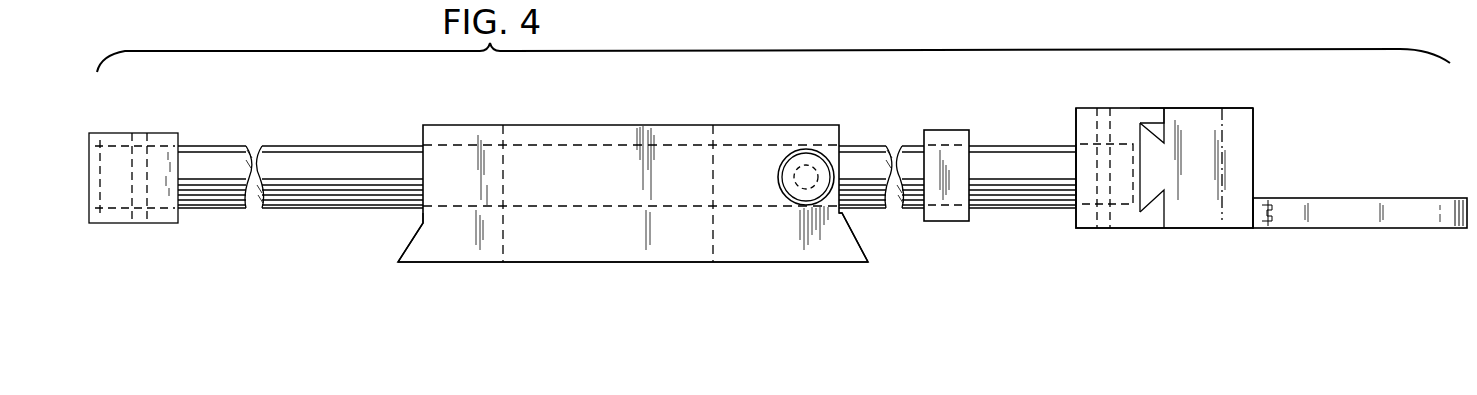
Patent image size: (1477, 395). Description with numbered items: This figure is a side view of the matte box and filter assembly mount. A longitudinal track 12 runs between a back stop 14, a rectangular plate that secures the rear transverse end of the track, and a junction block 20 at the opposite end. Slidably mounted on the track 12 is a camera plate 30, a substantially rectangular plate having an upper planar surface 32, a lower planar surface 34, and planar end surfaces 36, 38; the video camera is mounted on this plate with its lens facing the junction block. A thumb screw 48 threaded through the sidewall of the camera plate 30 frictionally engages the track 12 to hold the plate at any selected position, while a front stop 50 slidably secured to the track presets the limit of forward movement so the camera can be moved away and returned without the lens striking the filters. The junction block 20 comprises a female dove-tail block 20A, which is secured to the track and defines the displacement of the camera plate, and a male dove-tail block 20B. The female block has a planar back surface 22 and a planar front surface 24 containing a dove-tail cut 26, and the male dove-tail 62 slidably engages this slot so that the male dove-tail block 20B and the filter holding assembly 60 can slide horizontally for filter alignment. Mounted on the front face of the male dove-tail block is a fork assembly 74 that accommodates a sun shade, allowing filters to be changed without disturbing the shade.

The track 12 is at (225, 153).
The back stop 14 is at (147, 145).
The junction block 20 is at (1166, 179).
The female dove-tail block 20A is at (1087, 229).
The male dove-tail block 20B is at (1233, 229).
The back surface 22 is at (1076, 218).
The front surface 24 is at (1163, 123).
The dove-tail cut 26 is at (1165, 192).
The camera plate 30 is at (613, 193).
The upper planar surface 32 is at (650, 125).
The lower planar surface 34 is at (620, 263).
The planar end surface 36 is at (845, 215).
The planar end surface 38 is at (412, 217).
The thumb screw 48 is at (802, 160).
The front stop 50 is at (945, 150).
The filter holding assembly 60 is at (1240, 108).
The male dove-tail 62 is at (1142, 140).
The fork assembly 74 is at (1373, 198).